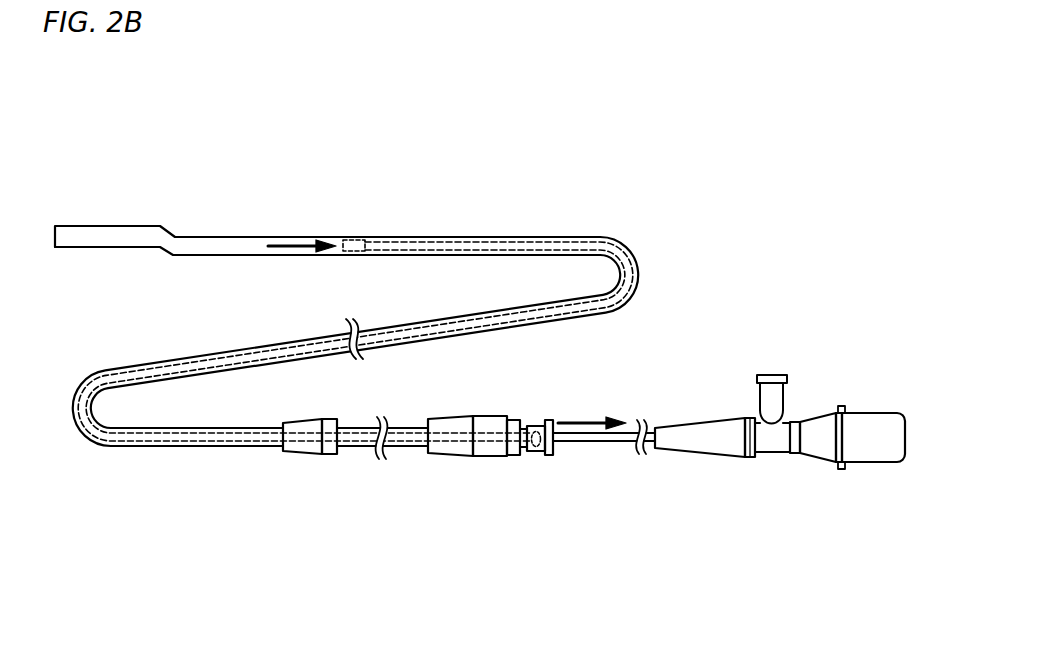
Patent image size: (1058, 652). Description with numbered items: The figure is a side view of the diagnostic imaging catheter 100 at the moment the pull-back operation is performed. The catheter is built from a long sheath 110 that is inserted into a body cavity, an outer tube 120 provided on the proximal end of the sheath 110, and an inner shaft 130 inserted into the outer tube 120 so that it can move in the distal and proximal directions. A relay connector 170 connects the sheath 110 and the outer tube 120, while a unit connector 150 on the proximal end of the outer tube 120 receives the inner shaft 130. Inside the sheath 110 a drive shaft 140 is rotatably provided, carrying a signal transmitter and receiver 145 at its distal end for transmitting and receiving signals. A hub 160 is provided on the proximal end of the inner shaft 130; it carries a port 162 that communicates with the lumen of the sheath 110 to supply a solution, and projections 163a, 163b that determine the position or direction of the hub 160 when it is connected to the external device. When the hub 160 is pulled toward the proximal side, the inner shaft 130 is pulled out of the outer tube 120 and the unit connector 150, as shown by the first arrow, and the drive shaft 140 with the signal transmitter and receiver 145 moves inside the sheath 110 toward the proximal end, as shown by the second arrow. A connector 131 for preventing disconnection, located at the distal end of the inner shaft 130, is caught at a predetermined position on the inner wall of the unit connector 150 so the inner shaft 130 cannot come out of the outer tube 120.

The diagnostic imaging catheter 100 is at (98, 126).
The sheath 110 is at (512, 237).
The outer tube 120 is at (365, 448).
The inner shaft 130 is at (620, 443).
The connector for preventing disconnection 131 is at (534, 447).
The drive shaft 140 is at (434, 249).
The signal transmitter and receiver 145 is at (355, 239).
The unit connector 150 is at (555, 460).
The hub 160 is at (697, 466).
The port 162 is at (757, 392).
The projection 163a is at (840, 406).
The projection 163b is at (841, 469).
The relay connector 170 is at (305, 456).